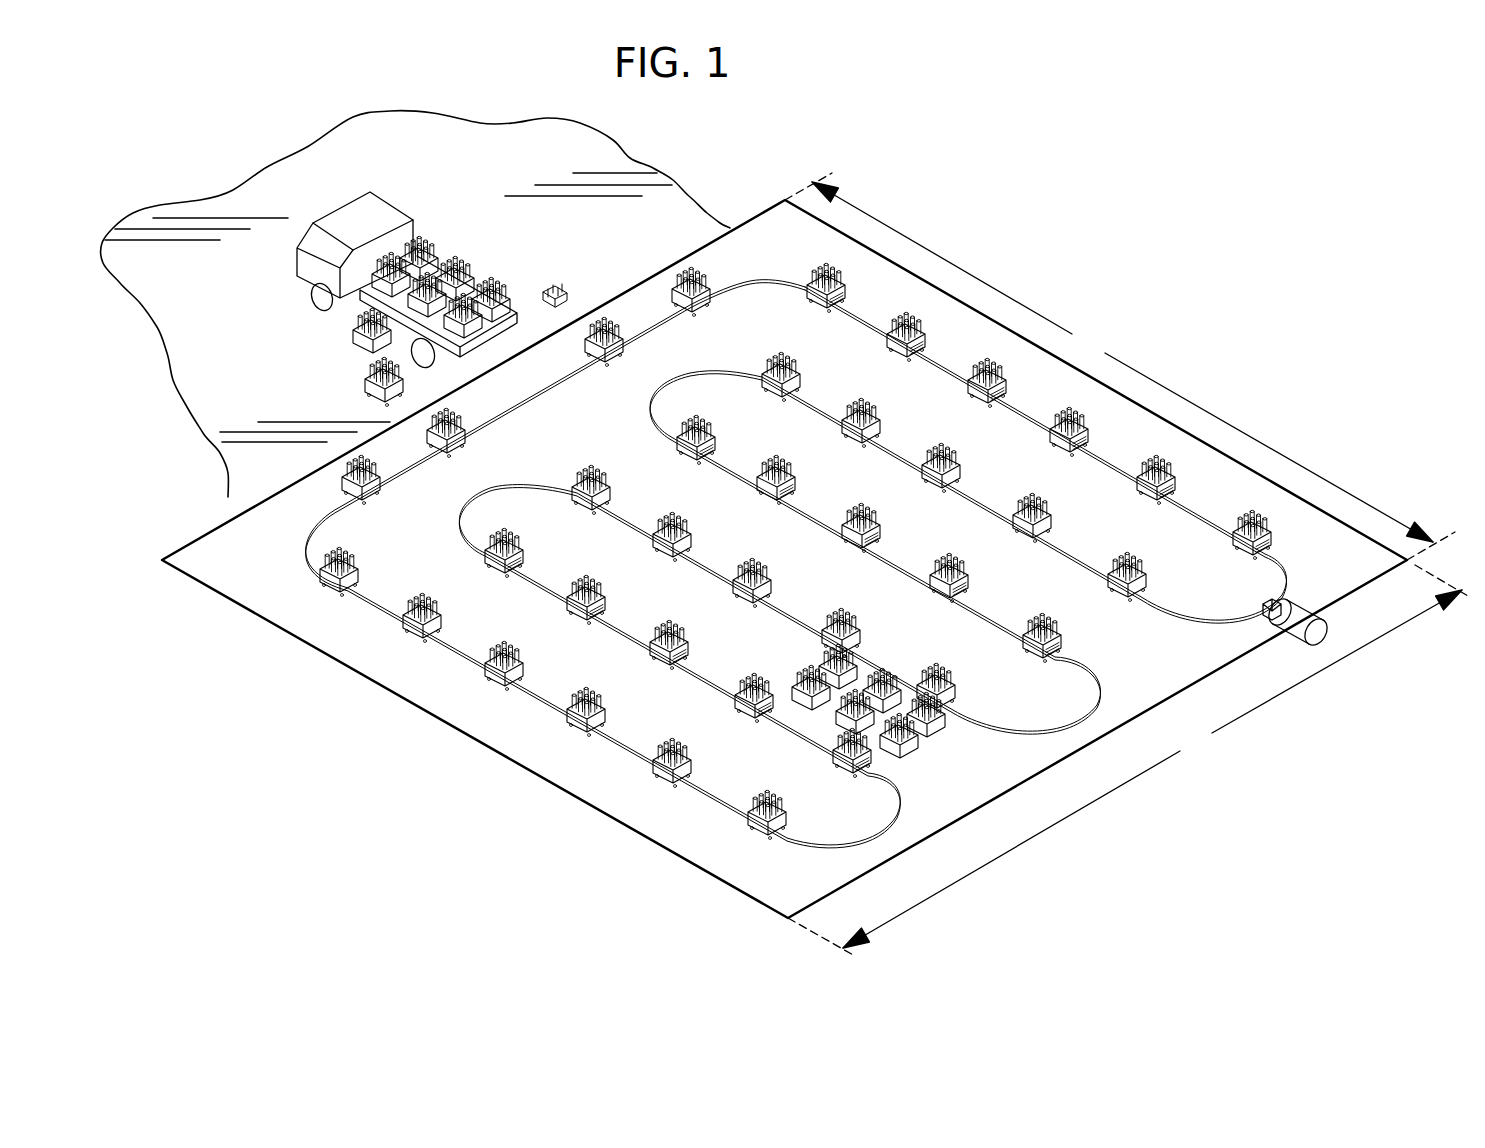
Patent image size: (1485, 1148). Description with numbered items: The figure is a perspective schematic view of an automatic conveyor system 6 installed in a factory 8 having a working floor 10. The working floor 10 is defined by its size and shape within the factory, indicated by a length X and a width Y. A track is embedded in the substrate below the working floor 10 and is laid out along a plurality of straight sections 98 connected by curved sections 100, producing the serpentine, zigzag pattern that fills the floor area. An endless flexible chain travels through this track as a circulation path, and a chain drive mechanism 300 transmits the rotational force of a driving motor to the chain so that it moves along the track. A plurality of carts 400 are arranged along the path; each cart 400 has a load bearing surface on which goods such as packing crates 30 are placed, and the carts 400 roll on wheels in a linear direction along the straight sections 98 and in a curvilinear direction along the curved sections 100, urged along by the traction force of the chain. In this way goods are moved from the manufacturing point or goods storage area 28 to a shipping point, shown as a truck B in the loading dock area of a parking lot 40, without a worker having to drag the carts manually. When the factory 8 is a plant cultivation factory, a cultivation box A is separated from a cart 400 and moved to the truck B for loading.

The automatic conveyor system 6 is at (1098, 727).
The factory 8 is at (1010, 242).
The working floor 10 is at (1158, 416).
The goods storage area 28 is at (940, 783).
The packing crate 30 is at (932, 733).
The parking lot 40 is at (421, 179).
The straight section 98 is at (547, 703).
The curved section 100 is at (760, 280).
The chain drive mechanism 300 is at (1290, 615).
The cart 400 is at (410, 632).
The cultivation box A is at (360, 346).
The truck B is at (377, 306).
The length X is at (1120, 366).
The width Y is at (1128, 760).